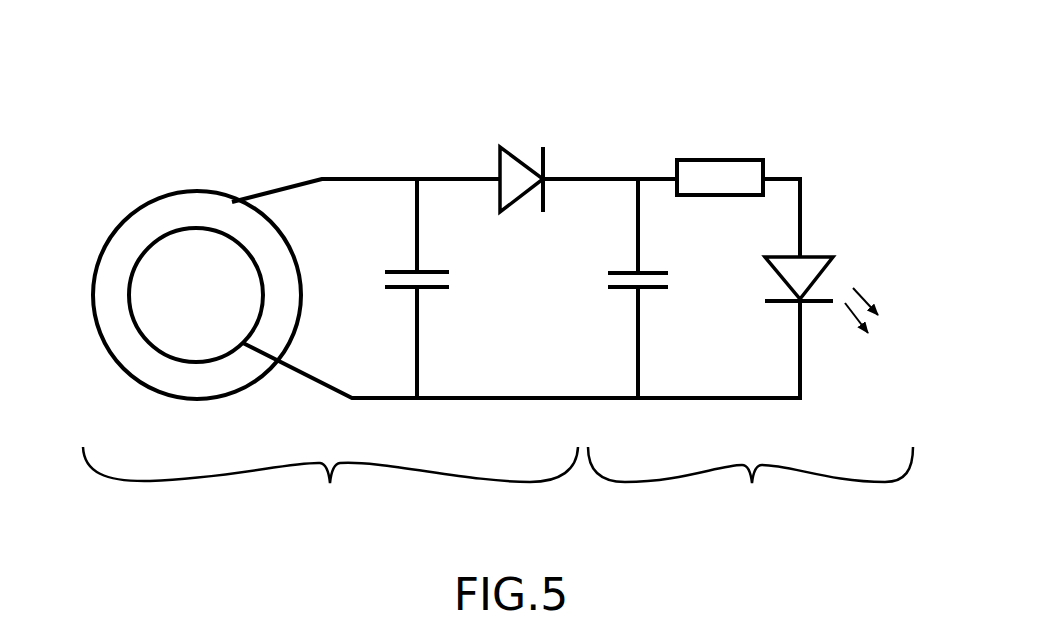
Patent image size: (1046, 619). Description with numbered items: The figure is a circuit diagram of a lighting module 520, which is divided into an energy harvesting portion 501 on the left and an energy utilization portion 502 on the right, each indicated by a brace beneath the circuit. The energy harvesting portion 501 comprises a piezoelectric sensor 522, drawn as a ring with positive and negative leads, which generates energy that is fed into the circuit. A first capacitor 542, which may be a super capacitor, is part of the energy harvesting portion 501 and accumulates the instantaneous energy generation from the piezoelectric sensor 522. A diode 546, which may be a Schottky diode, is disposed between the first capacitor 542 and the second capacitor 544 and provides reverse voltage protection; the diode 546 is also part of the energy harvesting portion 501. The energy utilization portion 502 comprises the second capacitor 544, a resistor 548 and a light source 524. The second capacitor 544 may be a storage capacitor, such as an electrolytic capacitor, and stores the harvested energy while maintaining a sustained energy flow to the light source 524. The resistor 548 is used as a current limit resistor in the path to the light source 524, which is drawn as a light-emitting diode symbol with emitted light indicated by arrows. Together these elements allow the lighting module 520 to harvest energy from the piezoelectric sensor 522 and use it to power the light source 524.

The lighting module 520 is at (482, 62).
The piezoelectric sensor 522 is at (234, 199).
The first capacitor 542 is at (452, 282).
The diode 546 is at (497, 162).
The resistor 548 is at (674, 160).
The second capacitor 544 is at (676, 285).
The light source 524 is at (771, 283).
The energy harvesting portion 501 is at (330, 481).
The energy utilization portion 502 is at (750, 482).